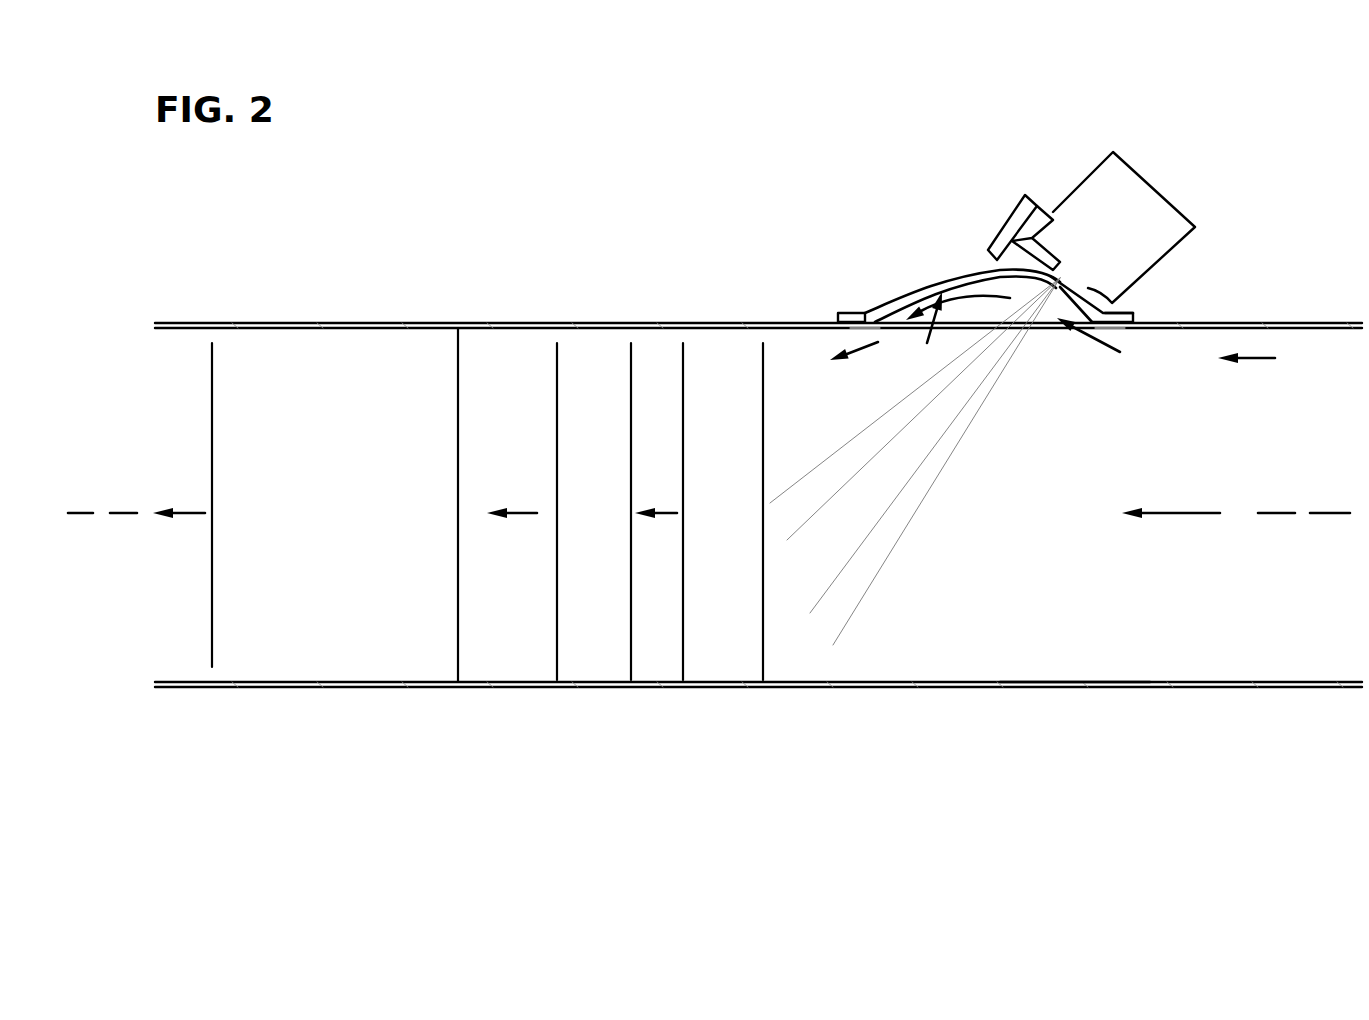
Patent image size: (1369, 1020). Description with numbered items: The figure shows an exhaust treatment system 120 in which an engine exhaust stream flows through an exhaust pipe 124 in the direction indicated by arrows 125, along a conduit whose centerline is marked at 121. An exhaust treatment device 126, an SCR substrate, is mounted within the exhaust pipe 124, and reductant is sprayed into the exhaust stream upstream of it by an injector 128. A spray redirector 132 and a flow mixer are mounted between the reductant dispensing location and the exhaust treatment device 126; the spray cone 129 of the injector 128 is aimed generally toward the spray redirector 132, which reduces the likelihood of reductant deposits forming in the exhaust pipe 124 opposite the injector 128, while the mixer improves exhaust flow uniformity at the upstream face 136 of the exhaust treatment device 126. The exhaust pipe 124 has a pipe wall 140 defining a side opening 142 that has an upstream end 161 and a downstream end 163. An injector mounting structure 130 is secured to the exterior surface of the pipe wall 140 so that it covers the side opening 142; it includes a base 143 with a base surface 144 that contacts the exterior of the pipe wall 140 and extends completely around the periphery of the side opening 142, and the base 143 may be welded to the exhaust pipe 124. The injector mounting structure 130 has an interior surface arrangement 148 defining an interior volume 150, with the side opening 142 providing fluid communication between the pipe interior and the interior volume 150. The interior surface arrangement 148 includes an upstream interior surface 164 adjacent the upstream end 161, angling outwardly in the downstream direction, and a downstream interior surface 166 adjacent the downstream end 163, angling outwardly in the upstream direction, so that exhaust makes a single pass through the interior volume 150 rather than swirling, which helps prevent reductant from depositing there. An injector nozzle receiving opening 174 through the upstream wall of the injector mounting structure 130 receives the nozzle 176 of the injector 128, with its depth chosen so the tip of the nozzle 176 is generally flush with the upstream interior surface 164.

The exhaust treatment system 120 is at (531, 182).
The exhaust conduit 121 is at (1322, 513).
The exhaust pipe 124 is at (390, 323).
The arrows 125 is at (185, 513).
The exhaust treatment device 126 is at (400, 663).
The injector 128 is at (1153, 182).
The spray cone 129 is at (955, 462).
The injector mounting structure 130 is at (957, 270).
The spray redirector 132 is at (738, 668).
The upstream face 136 is at (458, 428).
The pipe wall 140 is at (1072, 685).
The side opening 142 is at (1053, 325).
The base 143 is at (840, 316).
The base surface 144 is at (860, 327).
The interior surface arrangement 148 is at (958, 327).
The interior volume 150 is at (987, 288).
The upstream end 161 is at (1122, 325).
The downstream end 163 is at (876, 345).
The upstream interior surface 164 is at (1090, 317).
The downstream interior surface 166 is at (888, 310).
The injector nozzle receiving opening 174 is at (1064, 282).
The nozzle 176 is at (1080, 290).